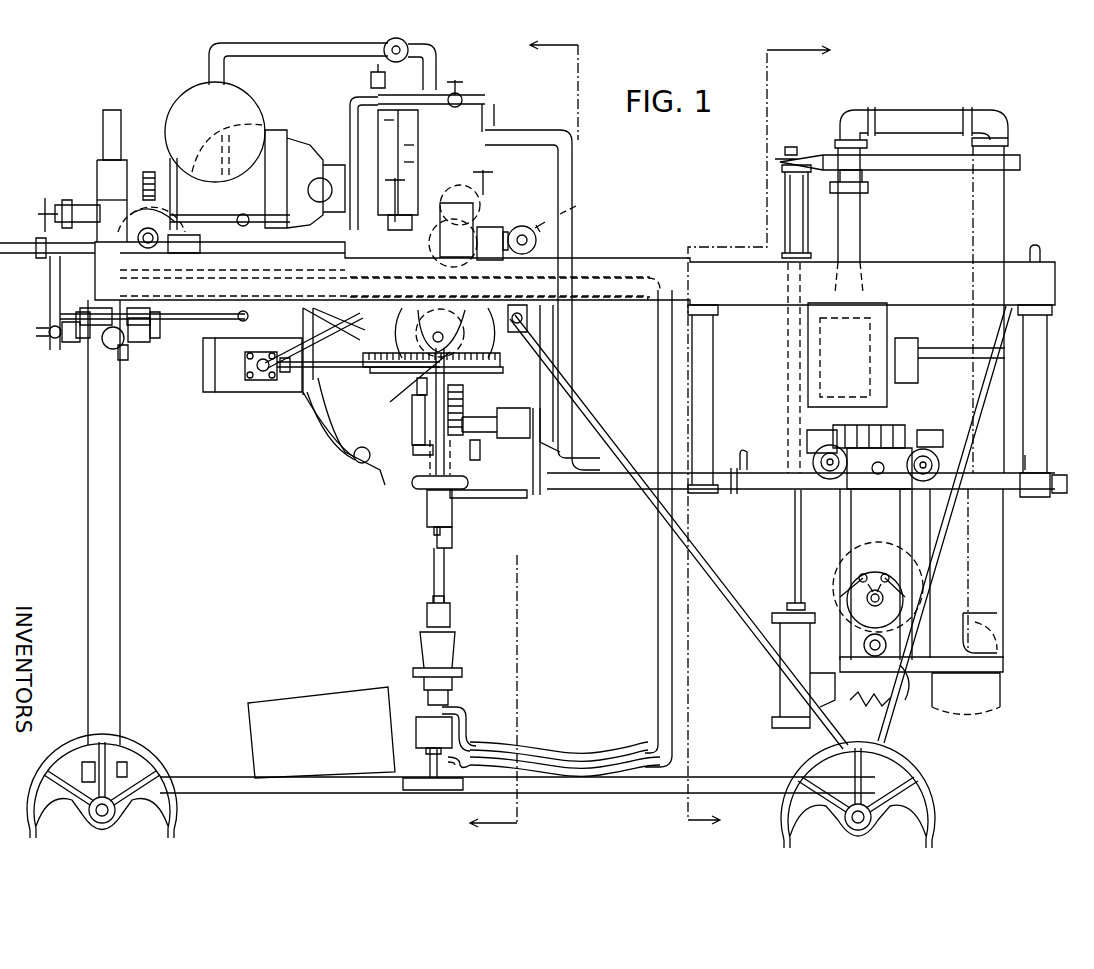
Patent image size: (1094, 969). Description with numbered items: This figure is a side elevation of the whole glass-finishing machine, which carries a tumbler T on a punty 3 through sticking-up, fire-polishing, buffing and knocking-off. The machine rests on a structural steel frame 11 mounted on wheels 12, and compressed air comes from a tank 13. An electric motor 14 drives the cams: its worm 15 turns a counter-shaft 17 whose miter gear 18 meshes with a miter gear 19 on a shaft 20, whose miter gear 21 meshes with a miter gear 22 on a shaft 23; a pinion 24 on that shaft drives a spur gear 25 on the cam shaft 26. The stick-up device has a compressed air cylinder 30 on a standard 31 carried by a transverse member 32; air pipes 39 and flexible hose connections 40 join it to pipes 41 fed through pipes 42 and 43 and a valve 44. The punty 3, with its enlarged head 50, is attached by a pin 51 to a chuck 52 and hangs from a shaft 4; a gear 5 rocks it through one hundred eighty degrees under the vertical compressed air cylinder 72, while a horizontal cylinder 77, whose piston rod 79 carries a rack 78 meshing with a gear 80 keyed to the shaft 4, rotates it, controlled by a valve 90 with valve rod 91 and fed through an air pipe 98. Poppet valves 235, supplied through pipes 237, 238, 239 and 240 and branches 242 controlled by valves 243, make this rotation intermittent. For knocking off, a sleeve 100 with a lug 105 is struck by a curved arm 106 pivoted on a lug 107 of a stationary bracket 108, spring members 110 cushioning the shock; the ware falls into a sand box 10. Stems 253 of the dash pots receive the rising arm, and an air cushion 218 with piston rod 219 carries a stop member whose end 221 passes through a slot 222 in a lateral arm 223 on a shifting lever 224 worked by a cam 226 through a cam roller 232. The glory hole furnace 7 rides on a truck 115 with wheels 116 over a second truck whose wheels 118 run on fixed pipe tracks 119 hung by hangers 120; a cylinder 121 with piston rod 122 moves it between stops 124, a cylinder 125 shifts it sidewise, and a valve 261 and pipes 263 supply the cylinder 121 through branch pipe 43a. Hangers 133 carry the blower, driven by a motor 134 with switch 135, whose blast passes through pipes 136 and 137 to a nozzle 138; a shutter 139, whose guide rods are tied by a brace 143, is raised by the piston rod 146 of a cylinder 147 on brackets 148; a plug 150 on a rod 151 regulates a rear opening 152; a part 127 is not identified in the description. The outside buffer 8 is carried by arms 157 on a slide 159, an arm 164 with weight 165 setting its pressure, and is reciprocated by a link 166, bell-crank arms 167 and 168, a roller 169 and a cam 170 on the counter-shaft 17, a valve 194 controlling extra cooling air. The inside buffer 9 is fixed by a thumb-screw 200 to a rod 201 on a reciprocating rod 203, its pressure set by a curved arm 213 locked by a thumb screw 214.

The punty 3 is at (445, 566).
The shaft 4 is at (497, 438).
The gear 5 is at (746, 438).
The glory hole furnace 7 is at (888, 316).
The outside buffer 8 is at (139, 339).
The inside buffer 9 is at (70, 342).
The sand box 10 is at (312, 705).
The structural steel frame 11 is at (100, 470).
The wheels 12 is at (136, 745).
The tank 13 is at (203, 93).
The electric motor 14 is at (274, 140).
The worm 15 is at (150, 170).
The counter-shaft 17 is at (158, 260).
The miter gear 18 is at (122, 205).
The miter gear 19 is at (198, 250).
The shaft 20 is at (270, 254).
The miter gear 21 is at (517, 229).
The miter gear 22 is at (560, 240).
The shaft 23 is at (576, 223).
The pinion 24 is at (578, 204).
The spur gear 25 is at (536, 212).
The cam shaft 26 is at (450, 248).
The compressed air cylinder 30 is at (416, 730).
The standard 31 is at (430, 762).
The transverse member 32 is at (410, 790).
The air pipes 39 is at (468, 717).
The flexible hose connections 40 is at (548, 760).
The pipes 41 is at (658, 605).
The pipe 42 is at (304, 52).
The branch pipe 43 is at (349, 110).
The branch pipe 43a is at (462, 100).
The valve 44 is at (326, 192).
The enlarged head 50 is at (450, 612).
The pin 51 is at (452, 534).
The chuck 52 is at (436, 534).
The vertical compressed air cylinder 72 is at (379, 145).
The horizontal compressed air cylinder 77 is at (235, 385).
The horizontal rack 78 is at (459, 410).
The piston rod 79 is at (430, 340).
The gear 80 is at (510, 335).
The valve 90 is at (265, 357).
The valve rod 91 is at (300, 387).
The air pipe 98 is at (325, 310).
The sleeve 100 is at (452, 509).
The lug 105 is at (433, 497).
The curved arm 106 is at (340, 432).
The lug 107 is at (367, 457).
The stationary bracket 108 is at (330, 412).
The spring members 110 is at (418, 486).
The truck 115 is at (873, 440).
The wheels 116 is at (938, 442).
The wheels 118 is at (812, 458).
The fixed pipe tracks 119 is at (757, 492).
The hangers 120 is at (715, 386).
The compressed air cylinder 121 is at (517, 498).
The piston rod 122 is at (590, 489).
The stops 124 is at (748, 456).
The cylinder 125 is at (880, 490).
The tank 127 is at (1000, 690).
The hangers 133 is at (840, 507).
The small electric motor 134 is at (875, 578).
The switch 135 is at (908, 700).
The pipe 136 is at (1004, 200).
The pipe 137 is at (908, 118).
The nozzle 138 is at (862, 217).
The shutter 139 is at (800, 230).
The brace 143 is at (921, 170).
The piston rod 146 is at (795, 578).
The vertical compressed-air cylinder 147 is at (780, 700).
The brackets 148 is at (906, 672).
The plug 150 is at (915, 338).
The rod 151 is at (960, 358).
The rear opening 152 is at (878, 353).
The arms 157 is at (76, 337).
The slide 159 is at (82, 309).
The arm 164 is at (120, 350).
The weight 165 is at (112, 350).
The link 166 is at (225, 318).
The arm 167 is at (254, 306).
The arm 168 is at (241, 214).
The roller 169 is at (214, 150).
The cam 170 is at (118, 185).
The valve 194 is at (75, 208).
The thumb-screw 200 is at (36, 329).
The rod 201 is at (50, 304).
The reciprocating rod 203 is at (15, 243).
The curved arm 213 is at (44, 257).
The thumb screw 214 is at (47, 198).
The air cushion 218 is at (497, 423).
The piston rod 219 is at (470, 417).
The stop member end 221 is at (417, 411).
The slot 222 is at (407, 442).
The lateral arm 223 is at (417, 447).
The shifting lever 224 is at (470, 408).
The cam 226 is at (472, 208).
The cam roller 232 is at (405, 167).
The poppet valves 235 is at (332, 270).
The pipe 237 is at (386, 56).
The pipe 238 is at (371, 80).
The pipe 239 is at (401, 132).
The pipe 240 is at (405, 152).
The branches 242 is at (400, 222).
The valves 243 is at (395, 188).
The stems 253 is at (348, 372).
The valve 261 is at (494, 118).
The pipes 263 is at (573, 153).
The tumbler T is at (445, 646).